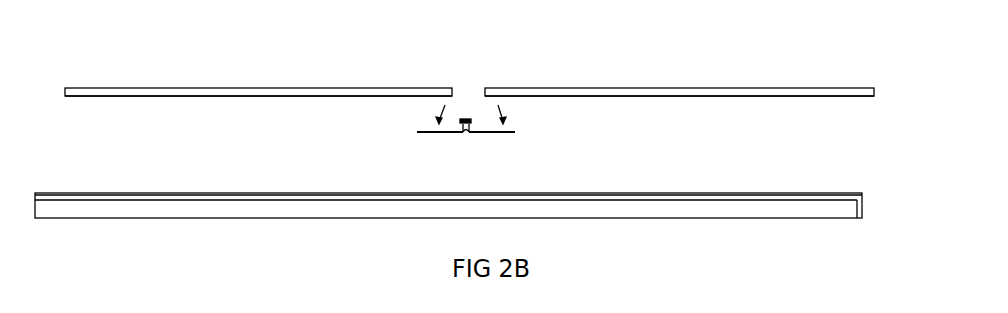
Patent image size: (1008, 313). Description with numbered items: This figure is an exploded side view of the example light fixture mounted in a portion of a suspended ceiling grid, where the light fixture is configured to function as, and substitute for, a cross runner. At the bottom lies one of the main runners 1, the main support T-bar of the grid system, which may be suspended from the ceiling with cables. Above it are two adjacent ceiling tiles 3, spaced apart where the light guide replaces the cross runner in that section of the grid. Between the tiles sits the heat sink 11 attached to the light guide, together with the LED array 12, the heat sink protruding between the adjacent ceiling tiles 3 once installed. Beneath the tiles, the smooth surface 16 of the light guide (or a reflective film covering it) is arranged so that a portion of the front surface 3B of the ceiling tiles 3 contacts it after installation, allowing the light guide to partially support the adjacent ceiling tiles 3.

The main runner 1 is at (621, 208).
The ceiling tile 3 is at (237, 88).
The front surface of ceiling tile 3B is at (348, 97).
The heat sink 11 is at (470, 122).
The LED array 12 is at (465, 118).
The smooth surface 16 is at (417, 131).